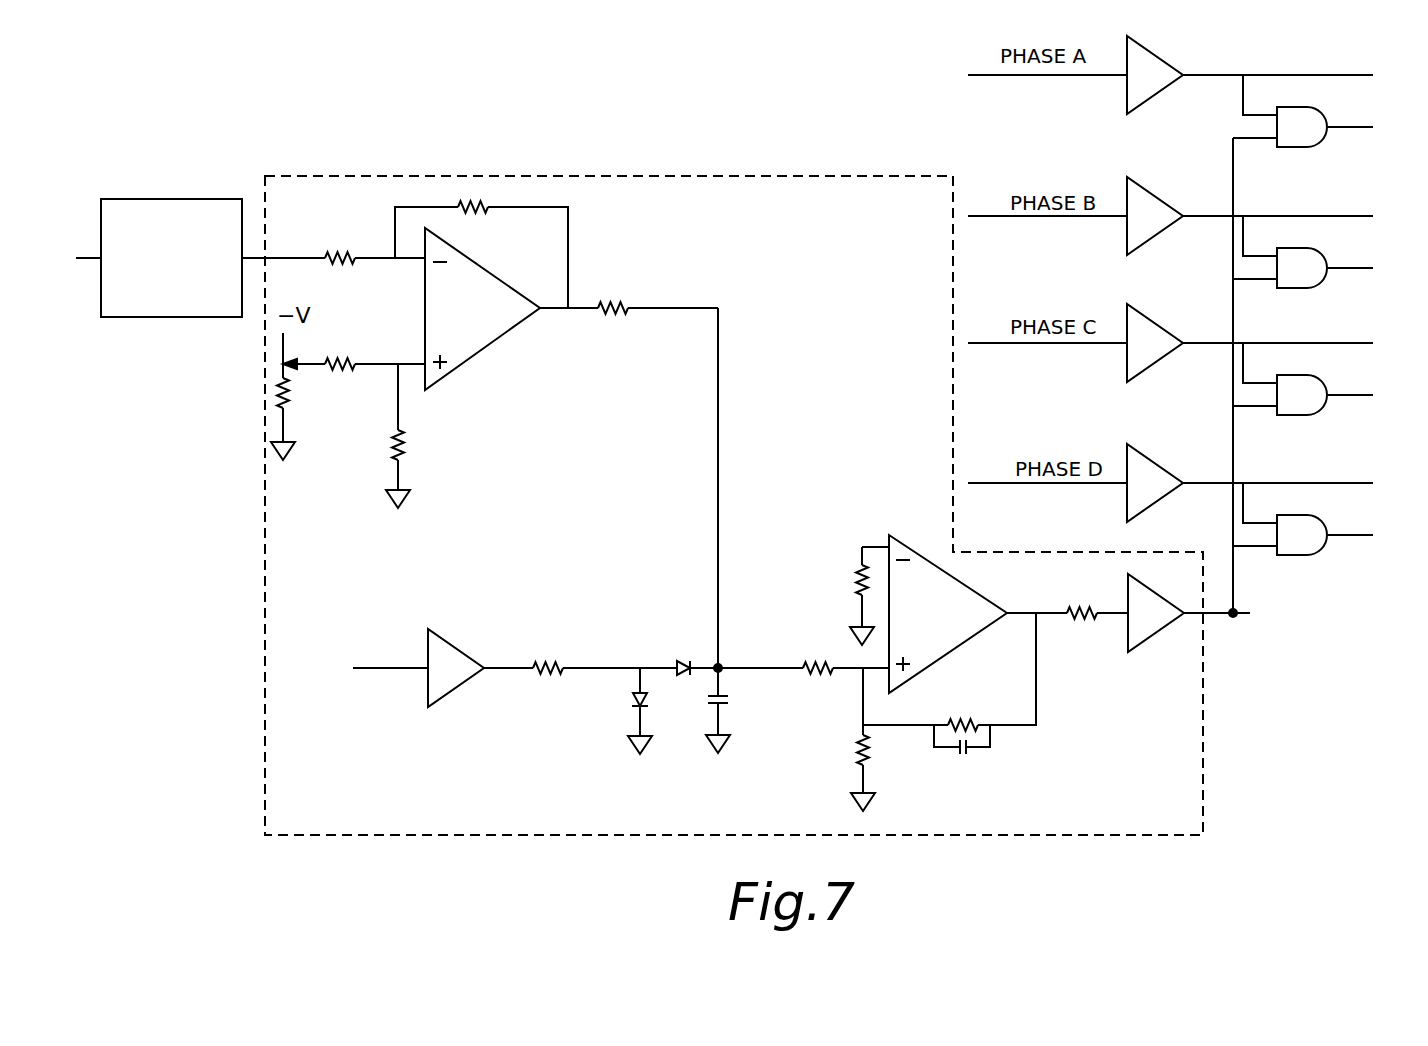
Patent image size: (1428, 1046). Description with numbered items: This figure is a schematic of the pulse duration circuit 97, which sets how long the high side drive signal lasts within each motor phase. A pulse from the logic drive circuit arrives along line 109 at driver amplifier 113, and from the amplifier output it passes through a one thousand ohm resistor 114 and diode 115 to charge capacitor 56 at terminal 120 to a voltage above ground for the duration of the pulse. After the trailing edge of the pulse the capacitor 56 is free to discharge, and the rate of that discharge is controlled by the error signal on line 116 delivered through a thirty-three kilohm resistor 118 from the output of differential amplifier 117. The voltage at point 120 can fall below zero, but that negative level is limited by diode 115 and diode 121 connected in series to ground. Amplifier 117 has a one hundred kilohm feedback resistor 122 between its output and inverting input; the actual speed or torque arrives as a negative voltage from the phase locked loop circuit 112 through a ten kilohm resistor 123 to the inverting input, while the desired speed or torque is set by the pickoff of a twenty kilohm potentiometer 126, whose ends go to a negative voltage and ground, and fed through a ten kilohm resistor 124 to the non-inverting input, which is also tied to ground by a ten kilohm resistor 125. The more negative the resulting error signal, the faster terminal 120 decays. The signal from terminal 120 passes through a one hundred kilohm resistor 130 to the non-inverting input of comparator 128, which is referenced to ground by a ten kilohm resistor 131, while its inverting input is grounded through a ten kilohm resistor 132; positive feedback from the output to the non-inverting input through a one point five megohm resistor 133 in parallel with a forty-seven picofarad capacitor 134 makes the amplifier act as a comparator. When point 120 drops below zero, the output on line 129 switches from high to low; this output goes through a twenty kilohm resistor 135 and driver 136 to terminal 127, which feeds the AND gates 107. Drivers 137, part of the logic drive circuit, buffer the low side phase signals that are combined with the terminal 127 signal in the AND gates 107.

The pulse duration circuit 97 is at (430, 176).
The phase locked loop circuit 112 is at (165, 199).
The resistor 123 is at (333, 252).
The differential amplifier 117 is at (498, 340).
The feedback resistor 122 is at (485, 212).
The resistor 118 is at (628, 302).
The line 116 is at (718, 408).
The potentiometer 126 is at (291, 395).
The resistor 124 is at (338, 358).
The resistor 125 is at (406, 447).
The line 109 is at (380, 668).
The driver amplifier 113 is at (465, 645).
The resistor 114 is at (548, 662).
The diode 121 is at (636, 702).
The diode 115 is at (680, 660).
The terminal 120 is at (721, 664).
The capacitor 56 is at (726, 703).
The resistor 130 is at (818, 674).
The comparator 128 is at (975, 590).
The resistor 132 is at (858, 578).
The resistor 131 is at (868, 760).
The line 129 is at (1020, 617).
The resistor 133 is at (962, 720).
The capacitor 134 is at (966, 755).
The resistor 135 is at (1085, 618).
The driver 136 is at (1158, 632).
The terminal 127 is at (1236, 618).
The drivers 137 is at (1158, 53).
The AND gates 107 is at (1322, 112).